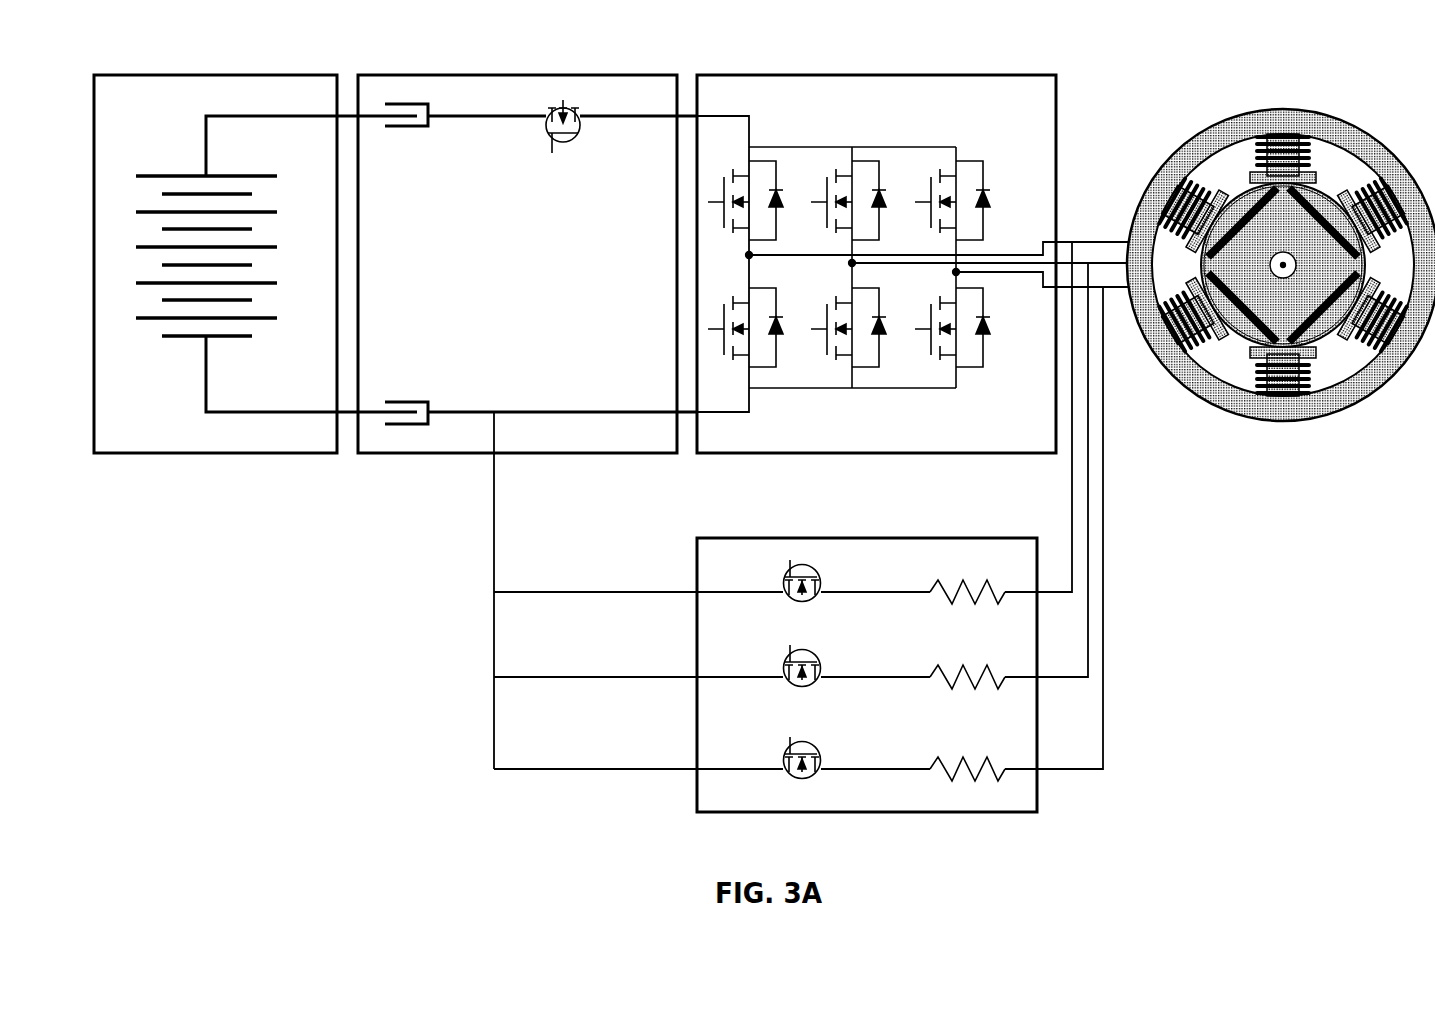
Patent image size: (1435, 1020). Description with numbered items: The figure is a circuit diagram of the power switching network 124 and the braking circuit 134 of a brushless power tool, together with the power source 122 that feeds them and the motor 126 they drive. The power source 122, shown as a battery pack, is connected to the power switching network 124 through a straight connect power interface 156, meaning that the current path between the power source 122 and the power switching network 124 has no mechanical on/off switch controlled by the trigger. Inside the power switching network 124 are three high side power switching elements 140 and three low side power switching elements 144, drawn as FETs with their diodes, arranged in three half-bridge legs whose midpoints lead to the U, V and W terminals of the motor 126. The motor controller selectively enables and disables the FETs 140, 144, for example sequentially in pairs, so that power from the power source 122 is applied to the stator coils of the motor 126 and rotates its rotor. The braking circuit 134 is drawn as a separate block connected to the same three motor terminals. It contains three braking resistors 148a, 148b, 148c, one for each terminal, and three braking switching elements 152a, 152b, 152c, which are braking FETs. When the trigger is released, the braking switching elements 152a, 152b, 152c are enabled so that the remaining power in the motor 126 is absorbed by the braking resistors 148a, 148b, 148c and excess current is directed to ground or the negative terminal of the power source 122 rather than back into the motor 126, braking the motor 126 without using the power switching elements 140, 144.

The power source 122 is at (223, 73).
The straight connect power interface 156 is at (510, 73).
The power switching network 124 is at (912, 237).
The high side power switching elements 140 is at (772, 190).
The low side power switching elements 144 is at (772, 302).
The motor 126 is at (1292, 421).
The braking circuit 134 is at (879, 649).
The braking switching element 152a is at (810, 601).
The braking switching element 152b is at (810, 686).
The braking switching element 152c is at (810, 778).
The braking resistor 148a is at (952, 604).
The braking resistor 148b is at (952, 689).
The braking resistor 148c is at (952, 781).